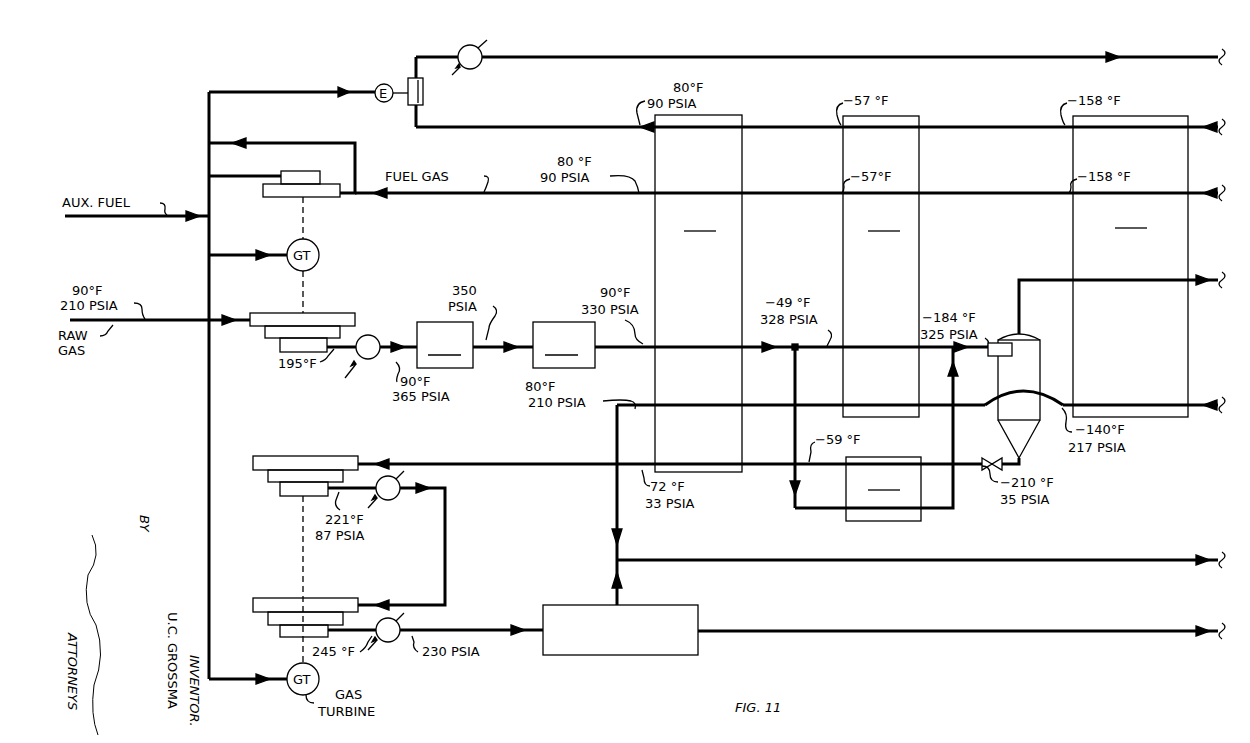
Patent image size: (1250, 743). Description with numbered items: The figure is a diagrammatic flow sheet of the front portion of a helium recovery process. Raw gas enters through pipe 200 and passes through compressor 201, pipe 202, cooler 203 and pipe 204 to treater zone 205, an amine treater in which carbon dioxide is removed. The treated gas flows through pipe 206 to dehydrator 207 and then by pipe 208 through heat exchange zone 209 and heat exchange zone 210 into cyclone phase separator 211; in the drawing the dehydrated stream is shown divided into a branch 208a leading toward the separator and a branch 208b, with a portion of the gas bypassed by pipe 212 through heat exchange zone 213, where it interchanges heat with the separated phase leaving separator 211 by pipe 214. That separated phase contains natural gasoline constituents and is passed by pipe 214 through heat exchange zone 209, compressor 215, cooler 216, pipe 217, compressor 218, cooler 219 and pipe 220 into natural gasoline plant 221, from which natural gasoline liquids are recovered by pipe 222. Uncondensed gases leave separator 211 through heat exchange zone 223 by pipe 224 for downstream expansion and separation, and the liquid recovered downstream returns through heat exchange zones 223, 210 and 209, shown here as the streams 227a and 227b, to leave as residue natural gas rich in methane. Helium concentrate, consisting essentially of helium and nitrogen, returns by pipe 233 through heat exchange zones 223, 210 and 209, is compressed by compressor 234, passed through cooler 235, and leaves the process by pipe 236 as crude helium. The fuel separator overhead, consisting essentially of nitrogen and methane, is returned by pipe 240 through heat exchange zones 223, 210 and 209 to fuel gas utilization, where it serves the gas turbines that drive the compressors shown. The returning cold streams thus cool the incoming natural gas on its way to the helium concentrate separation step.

The pipe 200 is at (183, 322).
The compressor 201 is at (279, 348).
The pipe 202 is at (353, 338).
The cooler 203 is at (353, 365).
The pipe 204 is at (403, 347).
The treater zone 205 is at (445, 345).
The pipe 206 is at (519, 350).
The dehydrator 207 is at (564, 345).
The pipe 208 is at (603, 348).
The gas line to separator 208a is at (867, 348).
The bypass line 208b is at (799, 507).
The heat exchange zone 209 is at (698, 293).
The heat exchange zone 210 is at (881, 266).
The cyclone phase separator 211 is at (1022, 336).
The pipe 212 is at (795, 385).
The heat exchange zone 213 is at (883, 489).
The pipe 214 is at (722, 462).
The compressor 215 is at (270, 457).
The cooler 216 is at (402, 484).
The pipe 217 is at (445, 494).
The compressor 218 is at (280, 632).
The cooler 219 is at (406, 626).
The pipe 220 is at (480, 630).
The natural gasoline plant 221 is at (698, 645).
The pipe 222 is at (1195, 634).
The heat exchange zone 223 is at (1130, 266).
The pipe 224 is at (1189, 280).
The separator bottoms line 227a is at (1182, 410).
The liquid product line 227b is at (1188, 562).
The pipe 233 is at (1212, 122).
The compressor 234 is at (423, 92).
The cooler 235 is at (460, 49).
The pipe 236 is at (1196, 52).
The pipe 240 is at (1192, 193).